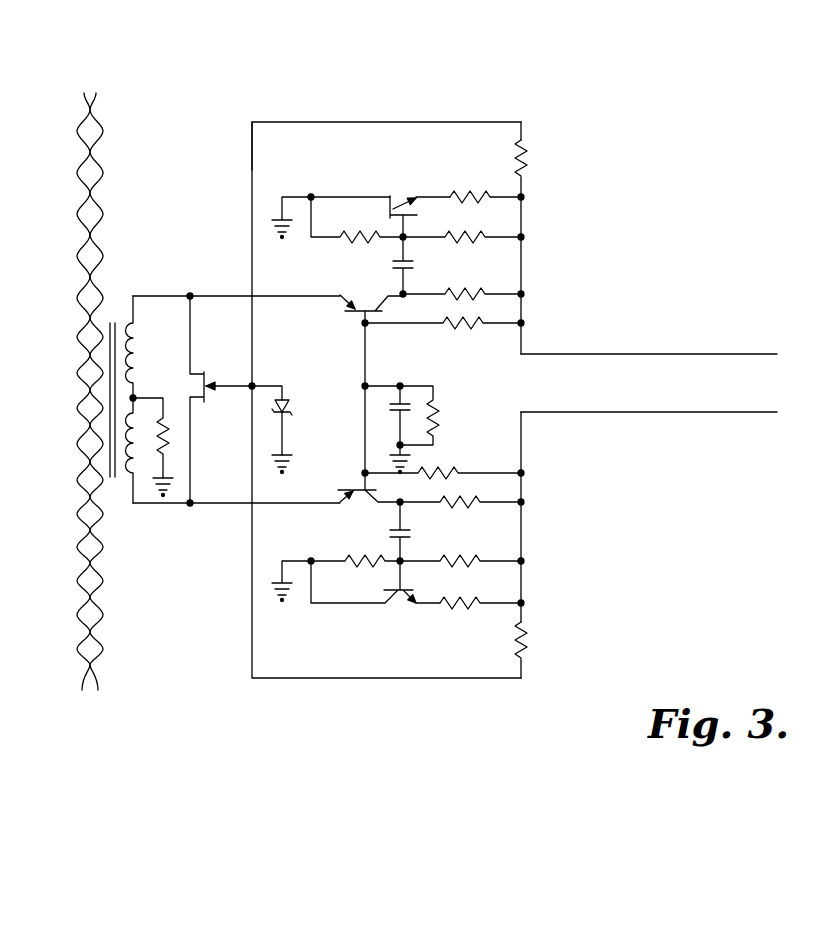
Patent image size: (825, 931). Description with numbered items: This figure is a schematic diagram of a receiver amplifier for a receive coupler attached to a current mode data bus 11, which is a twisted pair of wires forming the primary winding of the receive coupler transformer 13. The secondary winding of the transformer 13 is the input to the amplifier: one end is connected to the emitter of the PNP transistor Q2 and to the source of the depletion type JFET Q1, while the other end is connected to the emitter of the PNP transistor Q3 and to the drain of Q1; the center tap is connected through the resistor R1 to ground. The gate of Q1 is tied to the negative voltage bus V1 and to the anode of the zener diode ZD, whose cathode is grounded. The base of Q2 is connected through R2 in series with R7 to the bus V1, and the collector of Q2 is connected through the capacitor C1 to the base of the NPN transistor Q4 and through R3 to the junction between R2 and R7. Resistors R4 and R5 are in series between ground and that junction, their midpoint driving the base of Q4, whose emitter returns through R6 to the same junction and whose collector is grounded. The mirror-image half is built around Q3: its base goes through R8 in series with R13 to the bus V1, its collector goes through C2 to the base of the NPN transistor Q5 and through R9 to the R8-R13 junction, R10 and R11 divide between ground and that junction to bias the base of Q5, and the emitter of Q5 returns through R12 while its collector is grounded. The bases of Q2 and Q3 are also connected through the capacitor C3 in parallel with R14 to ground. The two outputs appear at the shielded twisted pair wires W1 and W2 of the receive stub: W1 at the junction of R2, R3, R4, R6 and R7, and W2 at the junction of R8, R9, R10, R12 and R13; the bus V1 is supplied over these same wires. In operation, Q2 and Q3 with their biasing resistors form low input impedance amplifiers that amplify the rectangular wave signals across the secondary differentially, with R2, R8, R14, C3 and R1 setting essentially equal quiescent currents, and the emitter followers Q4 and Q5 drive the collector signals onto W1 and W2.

The data bus 11 is at (100, 164).
The receive coupler transformer 13 is at (116, 298).
The negative voltage bus V1 is at (252, 166).
The depletion type JFET Q1 is at (209, 399).
The PNP transistor Q2 is at (371, 374).
The PNP transistor Q3 is at (368, 501).
The NPN transistor Q4 is at (361, 208).
The NPN transistor Q5 is at (375, 595).
The resistor R1 is at (175, 443).
The resistor R2 is at (443, 336).
The resistor R3 is at (463, 286).
The resistor R4 is at (462, 229).
The resistor R5 is at (357, 231).
The resistor R6 is at (487, 189).
The resistor R7 is at (537, 158).
The resistor R8 is at (443, 464).
The resistor R9 is at (460, 495).
The resistor R10 is at (462, 553).
The resistor R11 is at (336, 570).
The resistor R12 is at (482, 595).
The resistor R13 is at (541, 640).
The resistor R14 is at (438, 415).
The capacitor C1 is at (420, 267).
The capacitor C2 is at (415, 533).
The capacitor C3 is at (386, 428).
The zener diode ZD is at (290, 430).
The receive stub wire W1 is at (663, 354).
The receive stub wire W2 is at (666, 412).